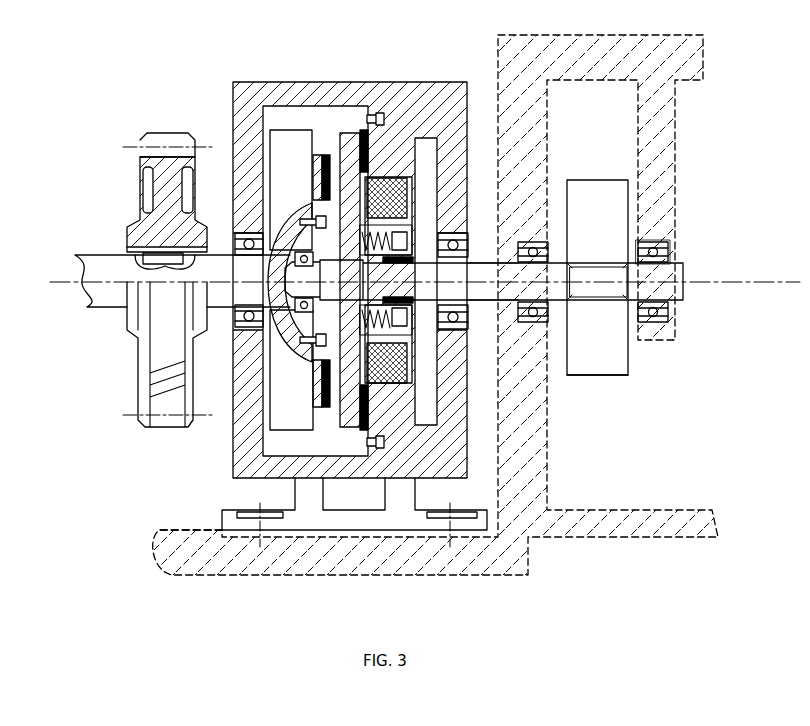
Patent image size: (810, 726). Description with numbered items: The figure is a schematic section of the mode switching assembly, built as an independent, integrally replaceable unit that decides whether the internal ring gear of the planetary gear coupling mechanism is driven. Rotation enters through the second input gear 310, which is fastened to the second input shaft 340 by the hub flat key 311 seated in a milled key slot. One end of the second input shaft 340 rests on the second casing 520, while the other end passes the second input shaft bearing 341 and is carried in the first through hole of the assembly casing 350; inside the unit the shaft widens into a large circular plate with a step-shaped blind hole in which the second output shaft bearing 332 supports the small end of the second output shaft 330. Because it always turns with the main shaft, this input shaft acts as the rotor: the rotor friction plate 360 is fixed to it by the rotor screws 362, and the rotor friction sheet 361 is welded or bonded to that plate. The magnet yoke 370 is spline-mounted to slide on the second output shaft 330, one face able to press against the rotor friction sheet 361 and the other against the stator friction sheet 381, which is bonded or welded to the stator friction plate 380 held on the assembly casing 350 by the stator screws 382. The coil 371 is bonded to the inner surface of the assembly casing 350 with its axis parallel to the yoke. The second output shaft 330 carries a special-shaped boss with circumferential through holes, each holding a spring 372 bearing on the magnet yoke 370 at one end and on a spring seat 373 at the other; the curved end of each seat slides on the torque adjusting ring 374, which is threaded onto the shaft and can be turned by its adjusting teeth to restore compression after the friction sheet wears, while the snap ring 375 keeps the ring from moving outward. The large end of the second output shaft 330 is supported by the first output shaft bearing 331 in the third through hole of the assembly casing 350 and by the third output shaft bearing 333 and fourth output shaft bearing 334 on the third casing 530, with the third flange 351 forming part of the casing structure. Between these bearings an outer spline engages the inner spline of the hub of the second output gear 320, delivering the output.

The second input gear 310 is at (168, 210).
The hub flat key 311 is at (140, 250).
The second input shaft bearing 341 is at (172, 258).
The second input shaft 340 is at (237, 220).
The rotor screws 362 is at (313, 217).
The second output shaft bearing 332 is at (378, 118).
The third casing 530 is at (542, 57).
The magnet yoke 370 is at (410, 180).
The coil 371 is at (395, 200).
The springs 372 is at (400, 230).
The spring seats 373 is at (395, 245).
The torque adjusting ring 374 is at (440, 252).
The snap ring 375 is at (525, 252).
The third output shaft bearing 333 is at (650, 250).
The fourth output shaft bearing 334 is at (660, 258).
The second output gear 320 is at (610, 308).
The second output shaft 330 is at (570, 375).
The first output shaft bearing 331 is at (452, 282).
The assembly casing 350 is at (437, 457).
The third flange 351 is at (415, 518).
The rotor friction plate 360 is at (305, 395).
The rotor friction sheet 361 is at (325, 340).
The stator friction sheet 381 is at (335, 392).
The stator screws 382 is at (372, 442).
The stator friction plate 380 is at (395, 500).
The second casing 520 is at (460, 567).